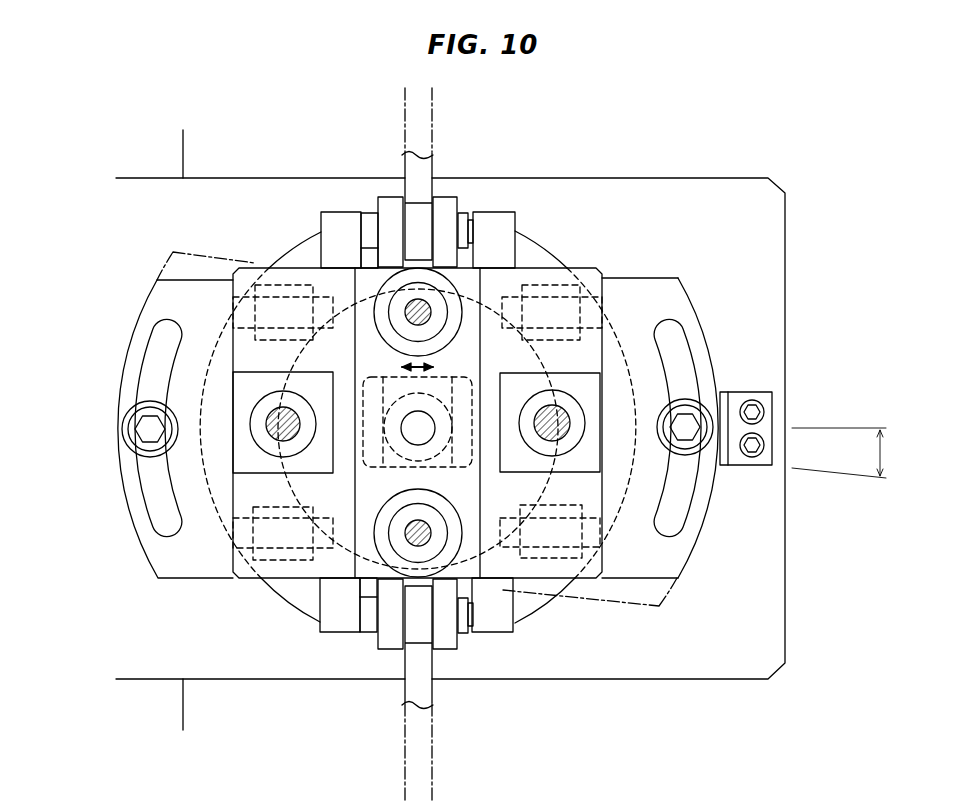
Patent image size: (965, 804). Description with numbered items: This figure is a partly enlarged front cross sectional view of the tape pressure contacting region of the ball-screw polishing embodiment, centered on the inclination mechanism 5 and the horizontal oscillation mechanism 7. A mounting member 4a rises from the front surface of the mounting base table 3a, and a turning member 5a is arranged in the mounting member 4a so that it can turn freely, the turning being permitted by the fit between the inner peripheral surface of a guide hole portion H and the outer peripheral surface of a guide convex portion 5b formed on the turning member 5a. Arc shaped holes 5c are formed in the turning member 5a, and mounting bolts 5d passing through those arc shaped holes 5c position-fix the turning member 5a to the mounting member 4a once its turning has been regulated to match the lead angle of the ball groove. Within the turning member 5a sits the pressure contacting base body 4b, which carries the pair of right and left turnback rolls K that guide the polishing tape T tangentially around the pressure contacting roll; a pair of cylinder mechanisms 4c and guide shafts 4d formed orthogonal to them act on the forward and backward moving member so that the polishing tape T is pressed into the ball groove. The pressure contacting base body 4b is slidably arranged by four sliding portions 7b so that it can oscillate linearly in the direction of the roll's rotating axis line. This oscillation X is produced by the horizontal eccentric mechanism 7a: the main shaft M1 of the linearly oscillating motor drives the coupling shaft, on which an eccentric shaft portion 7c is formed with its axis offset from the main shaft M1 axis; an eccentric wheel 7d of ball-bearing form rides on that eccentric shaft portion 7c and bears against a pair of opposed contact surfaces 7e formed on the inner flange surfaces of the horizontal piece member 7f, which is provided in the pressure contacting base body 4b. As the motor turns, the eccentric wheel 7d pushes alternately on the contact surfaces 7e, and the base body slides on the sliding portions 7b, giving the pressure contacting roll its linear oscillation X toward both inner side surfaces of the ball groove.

The mounting base table 3a is at (172, 157).
The mounting member 4a is at (695, 205).
The pressure contacting base body 4b is at (583, 488).
The cylinder mechanism 4c is at (425, 305).
The guide shaft 4d is at (267, 431).
The inclination mechanism 5 is at (727, 318).
The turning member 5a is at (643, 295).
The guide convex portion 5b is at (632, 478).
The arc shaped hole 5c is at (140, 378).
The mounting bolt 5d is at (143, 428).
The horizontal oscillation mechanism 7 is at (470, 162).
The horizontal eccentric mechanism 7a is at (502, 158).
The sliding portion 7b is at (288, 285).
The eccentric shaft portion 7c is at (418, 410).
The eccentric wheel 7d is at (392, 450).
The contact surface 7e is at (385, 385).
The horizontal piece member 7f is at (453, 390).
The turnback roll K is at (390, 210).
The horizontal linear oscillation X is at (416, 365).
The polishing tape T is at (420, 672).
The main shaft M1 is at (418, 440).
The guide hole portion H is at (530, 617).